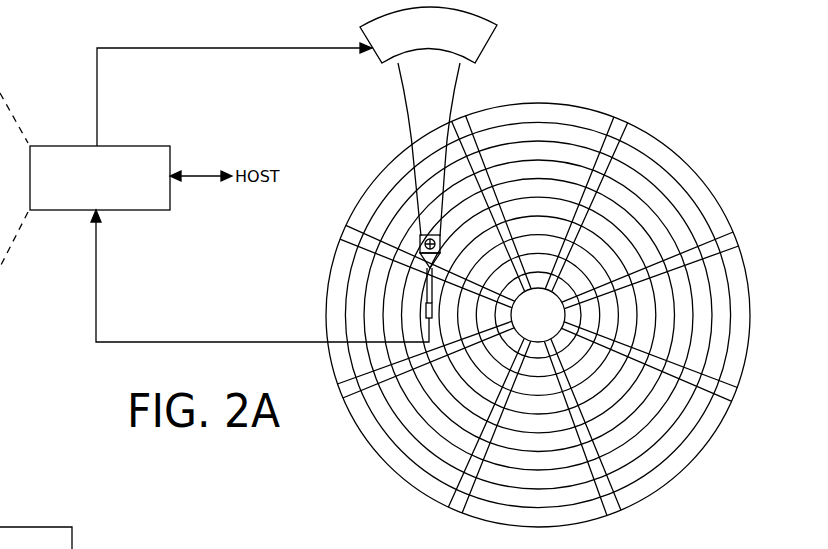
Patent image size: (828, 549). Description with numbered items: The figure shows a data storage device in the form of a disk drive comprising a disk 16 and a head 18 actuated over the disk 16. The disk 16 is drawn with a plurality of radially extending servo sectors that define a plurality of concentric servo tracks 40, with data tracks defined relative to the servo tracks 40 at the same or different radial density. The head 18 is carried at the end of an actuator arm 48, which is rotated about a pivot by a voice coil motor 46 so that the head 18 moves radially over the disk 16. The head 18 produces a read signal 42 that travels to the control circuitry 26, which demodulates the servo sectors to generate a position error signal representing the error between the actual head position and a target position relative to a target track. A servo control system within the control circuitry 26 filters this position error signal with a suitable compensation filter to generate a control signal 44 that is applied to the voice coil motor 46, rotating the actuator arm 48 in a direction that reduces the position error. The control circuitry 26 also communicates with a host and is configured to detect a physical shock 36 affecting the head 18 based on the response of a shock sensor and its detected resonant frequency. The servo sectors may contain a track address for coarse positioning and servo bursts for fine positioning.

The disk 16 is at (683, 152).
The head 18 is at (423, 307).
The control circuitry 26 is at (137, 146).
The physical shock detection 36 is at (38, 527).
The servo tracks 40 is at (523, 130).
The read signal 42 is at (246, 342).
The control signal 44 is at (97, 82).
The voice coil motor 46 is at (378, 58).
The actuator arm 48 is at (413, 111).